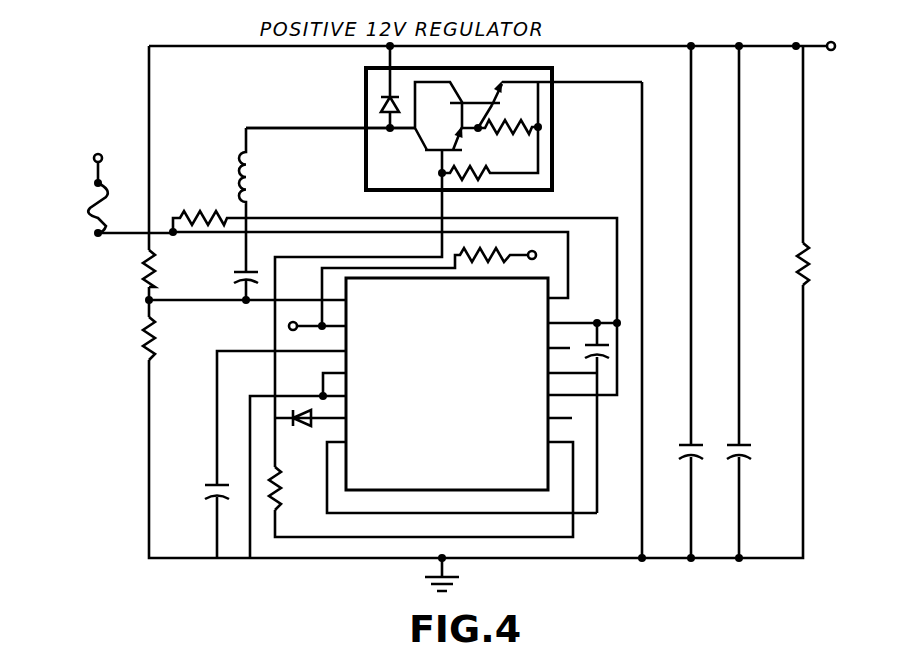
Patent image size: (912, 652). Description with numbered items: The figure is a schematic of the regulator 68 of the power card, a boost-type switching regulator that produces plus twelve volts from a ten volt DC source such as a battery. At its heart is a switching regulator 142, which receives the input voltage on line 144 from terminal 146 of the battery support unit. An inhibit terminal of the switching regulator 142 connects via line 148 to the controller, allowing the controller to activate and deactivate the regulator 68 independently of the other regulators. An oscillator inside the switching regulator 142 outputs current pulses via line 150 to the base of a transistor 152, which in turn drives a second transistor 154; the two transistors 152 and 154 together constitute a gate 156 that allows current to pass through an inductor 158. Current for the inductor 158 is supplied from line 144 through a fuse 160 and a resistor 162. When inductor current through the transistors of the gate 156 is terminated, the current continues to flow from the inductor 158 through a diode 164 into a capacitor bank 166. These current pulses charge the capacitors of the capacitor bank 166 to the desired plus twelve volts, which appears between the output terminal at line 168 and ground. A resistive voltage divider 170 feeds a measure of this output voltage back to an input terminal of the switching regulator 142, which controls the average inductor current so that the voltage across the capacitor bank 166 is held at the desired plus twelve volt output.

The regulator 68 is at (816, 360).
The switching regulator 142 is at (433, 491).
The line 144 is at (96, 172).
The terminal 146 is at (94, 158).
The line 148 is at (311, 331).
The line 150 is at (446, 200).
The transistor 152 is at (422, 150).
The second transistor 154 is at (493, 111).
The gate 156 is at (444, 118).
The inductor 158 is at (238, 153).
The fuse 160 is at (93, 227).
The resistor 162 is at (219, 214).
The diode 164 is at (382, 104).
The capacitor bank 166 is at (730, 478).
The line 168 is at (641, 45).
The resistive voltage divider 170 is at (130, 310).